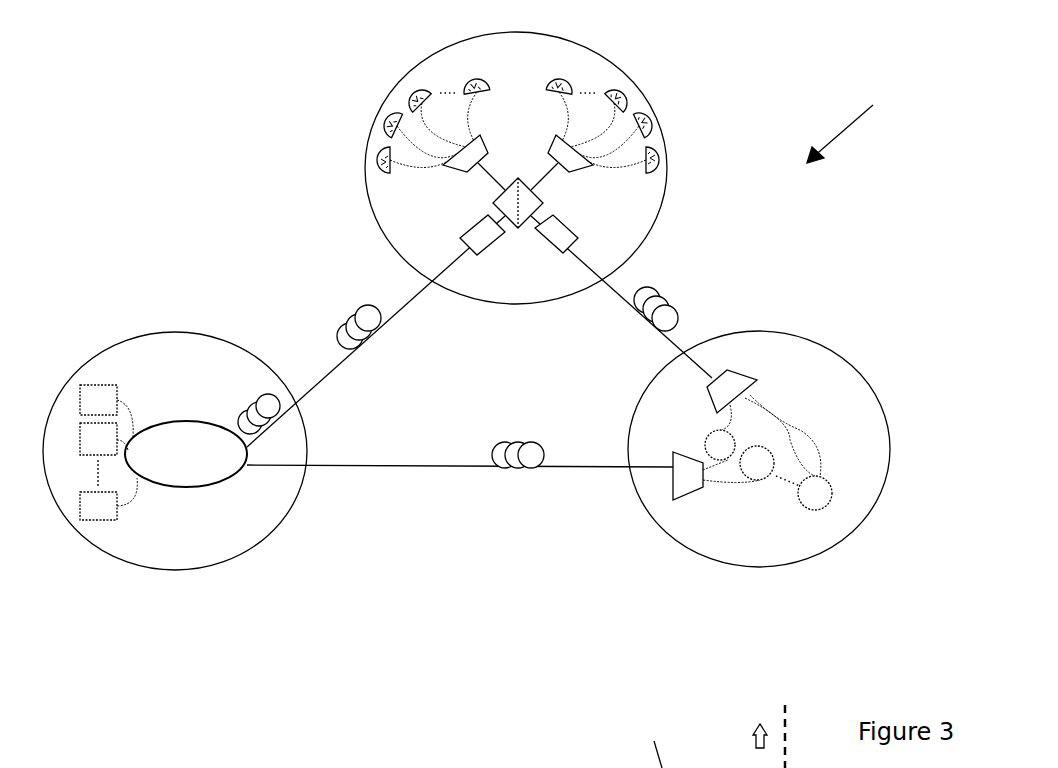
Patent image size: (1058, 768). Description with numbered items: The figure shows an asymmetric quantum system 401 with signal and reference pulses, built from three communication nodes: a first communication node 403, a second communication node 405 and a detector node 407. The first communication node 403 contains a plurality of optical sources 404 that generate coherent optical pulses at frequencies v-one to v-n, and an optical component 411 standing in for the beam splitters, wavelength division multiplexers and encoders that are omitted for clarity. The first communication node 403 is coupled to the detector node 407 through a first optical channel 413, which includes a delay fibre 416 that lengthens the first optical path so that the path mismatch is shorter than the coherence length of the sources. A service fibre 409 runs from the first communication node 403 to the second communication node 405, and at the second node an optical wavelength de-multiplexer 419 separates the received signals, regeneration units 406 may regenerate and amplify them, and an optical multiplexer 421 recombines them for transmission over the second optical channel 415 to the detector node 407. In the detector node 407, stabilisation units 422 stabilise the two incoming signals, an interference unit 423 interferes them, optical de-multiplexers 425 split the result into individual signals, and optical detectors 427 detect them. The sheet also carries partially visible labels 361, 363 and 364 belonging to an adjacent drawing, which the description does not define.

The quantum system 401 is at (853, 114).
The first communication node 403 is at (175, 471).
The optical sources 404 is at (112, 439).
The second communication node 405 is at (759, 474).
The regeneration units 406 is at (767, 468).
The detector node 407 is at (516, 157).
The service fibre 409 is at (460, 479).
The optical component 411 is at (186, 471).
The first optical channel 413 is at (376, 331).
The second optical channel 415 is at (630, 297).
The delay fibre 416 is at (227, 389).
The optical wavelength de-multiplexer 419 is at (702, 495).
The optical multiplexer 421 is at (764, 388).
The stabilisation units 422 is at (519, 246).
The interference unit 423 is at (487, 203).
The optical de-multiplexers 425 is at (518, 157).
The optical detectors 427 is at (518, 115).
The alarm indicator 364 is at (635, 740).
The status indicator 361 is at (76, 760).
The status indicator 363 is at (355, 760).